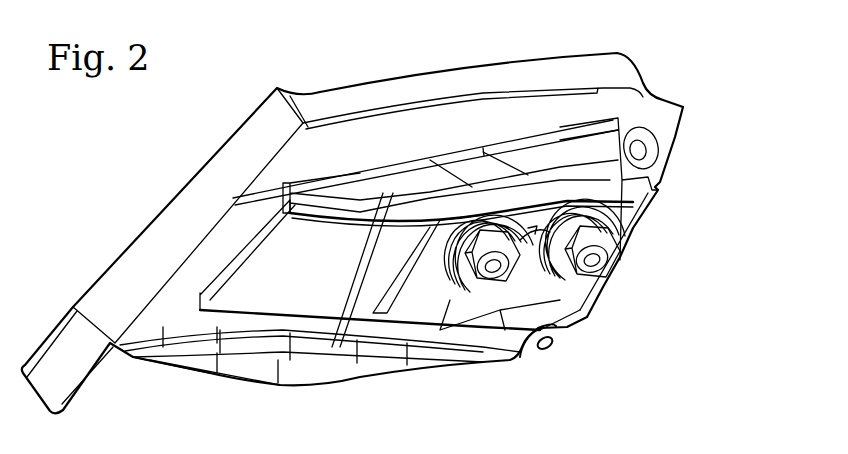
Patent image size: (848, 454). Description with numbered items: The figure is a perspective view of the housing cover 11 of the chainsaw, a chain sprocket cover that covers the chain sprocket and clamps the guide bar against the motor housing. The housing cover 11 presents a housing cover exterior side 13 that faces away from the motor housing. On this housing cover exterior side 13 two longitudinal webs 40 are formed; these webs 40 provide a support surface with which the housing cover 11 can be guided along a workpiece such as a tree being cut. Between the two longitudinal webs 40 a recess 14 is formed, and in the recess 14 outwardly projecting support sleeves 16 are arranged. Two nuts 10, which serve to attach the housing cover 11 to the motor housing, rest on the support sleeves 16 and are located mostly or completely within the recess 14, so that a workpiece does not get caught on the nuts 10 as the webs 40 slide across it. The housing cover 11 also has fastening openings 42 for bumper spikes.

The nut 10 is at (583, 282).
The housing cover 11 is at (378, 130).
The housing cover exterior side 13 is at (307, 367).
The recess 14 is at (527, 283).
The support sleeve 16 is at (573, 207).
The longitudinal web 40 is at (473, 200).
The fastening opening 42 is at (655, 152).